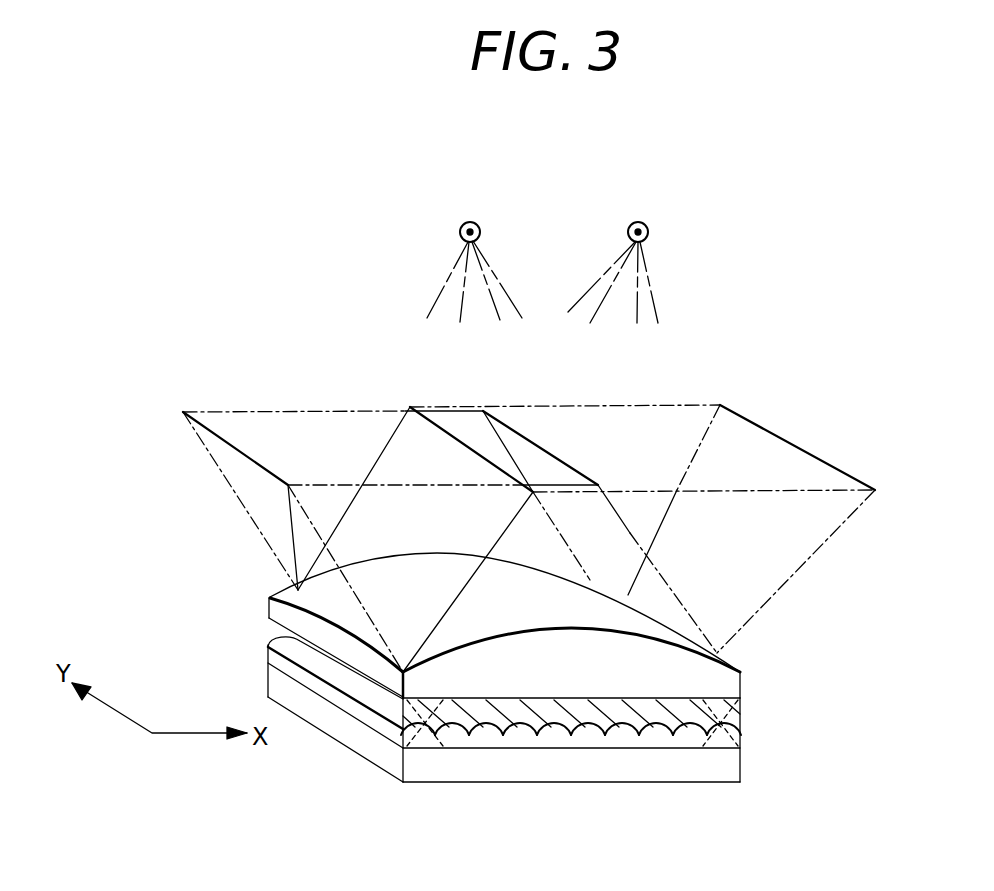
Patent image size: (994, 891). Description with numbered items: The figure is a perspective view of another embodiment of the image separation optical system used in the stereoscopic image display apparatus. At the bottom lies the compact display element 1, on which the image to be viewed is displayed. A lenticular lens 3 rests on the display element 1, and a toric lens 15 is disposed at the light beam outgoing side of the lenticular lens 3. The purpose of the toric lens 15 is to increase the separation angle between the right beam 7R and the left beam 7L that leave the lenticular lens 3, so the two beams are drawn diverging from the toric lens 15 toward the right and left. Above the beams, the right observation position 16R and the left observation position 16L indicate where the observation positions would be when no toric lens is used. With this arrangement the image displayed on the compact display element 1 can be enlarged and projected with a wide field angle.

The compact display element 1 is at (733, 772).
The lenticular lens 3 is at (740, 727).
The toric lens 15 is at (740, 665).
The right beam 7R is at (252, 521).
The left beam 7L is at (815, 556).
The right observation position 16R is at (476, 221).
The left observation position 16L is at (644, 221).